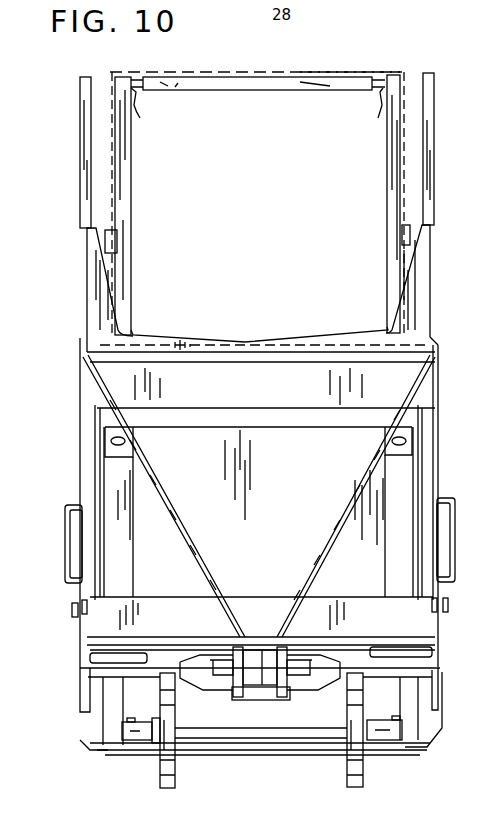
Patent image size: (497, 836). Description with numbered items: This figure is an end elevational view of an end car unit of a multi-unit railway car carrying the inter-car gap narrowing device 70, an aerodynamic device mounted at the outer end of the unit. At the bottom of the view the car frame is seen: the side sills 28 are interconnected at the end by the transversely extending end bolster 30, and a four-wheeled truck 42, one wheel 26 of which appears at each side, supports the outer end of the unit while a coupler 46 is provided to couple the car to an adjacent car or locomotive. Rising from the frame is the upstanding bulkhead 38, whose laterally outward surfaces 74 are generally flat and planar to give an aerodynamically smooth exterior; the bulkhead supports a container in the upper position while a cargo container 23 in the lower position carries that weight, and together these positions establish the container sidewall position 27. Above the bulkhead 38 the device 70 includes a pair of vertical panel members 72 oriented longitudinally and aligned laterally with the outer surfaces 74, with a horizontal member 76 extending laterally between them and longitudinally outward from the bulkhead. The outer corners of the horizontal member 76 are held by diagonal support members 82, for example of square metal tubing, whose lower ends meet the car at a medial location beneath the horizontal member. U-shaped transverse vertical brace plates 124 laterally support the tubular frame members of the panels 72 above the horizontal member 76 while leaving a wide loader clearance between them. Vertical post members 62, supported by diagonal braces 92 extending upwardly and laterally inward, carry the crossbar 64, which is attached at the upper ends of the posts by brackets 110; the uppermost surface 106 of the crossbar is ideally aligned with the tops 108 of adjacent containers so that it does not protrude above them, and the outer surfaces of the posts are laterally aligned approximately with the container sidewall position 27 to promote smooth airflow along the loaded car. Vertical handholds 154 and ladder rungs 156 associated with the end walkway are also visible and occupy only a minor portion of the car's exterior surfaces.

The cargo container 23 is at (307, 470).
The wheel 26 is at (345, 770).
The container sidewall position 27 is at (110, 180).
The side sill 28 is at (433, 720).
The end bolster 30 is at (180, 625).
The bulkhead structure 38 is at (264, 400).
The four-wheeled truck 42 is at (382, 730).
The coupler 46 is at (265, 682).
The vertical post member 62 is at (131, 206).
The crossbar 64 is at (240, 78).
The inter-car gap narrowing device 70 is at (440, 98).
The vertical panel member 72 is at (80, 116).
The outer surface of bulkhead 74 is at (75, 383).
The horizontal member 76 is at (212, 342).
The diagonal support member 82 is at (152, 470).
The diagonal brace 92 is at (110, 260).
The uppermost surface of crossbar 106 is at (190, 72).
The container top 108 is at (330, 68).
The bracket 110 is at (140, 112).
The transverse vertical brace plate 124 is at (425, 302).
The vertical handhold 154 is at (65, 520).
The ladder rung 156 is at (78, 670).